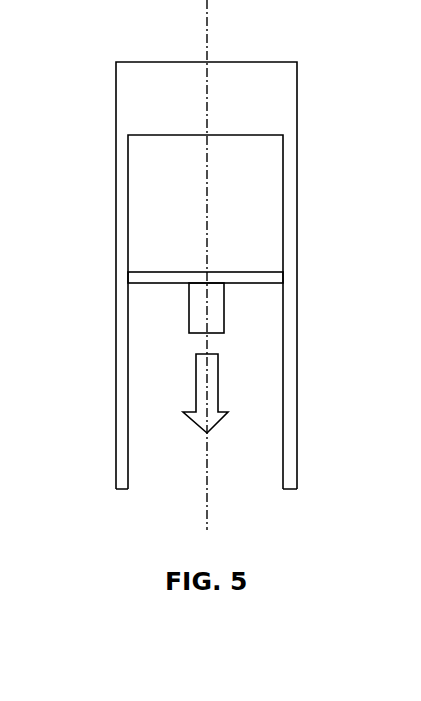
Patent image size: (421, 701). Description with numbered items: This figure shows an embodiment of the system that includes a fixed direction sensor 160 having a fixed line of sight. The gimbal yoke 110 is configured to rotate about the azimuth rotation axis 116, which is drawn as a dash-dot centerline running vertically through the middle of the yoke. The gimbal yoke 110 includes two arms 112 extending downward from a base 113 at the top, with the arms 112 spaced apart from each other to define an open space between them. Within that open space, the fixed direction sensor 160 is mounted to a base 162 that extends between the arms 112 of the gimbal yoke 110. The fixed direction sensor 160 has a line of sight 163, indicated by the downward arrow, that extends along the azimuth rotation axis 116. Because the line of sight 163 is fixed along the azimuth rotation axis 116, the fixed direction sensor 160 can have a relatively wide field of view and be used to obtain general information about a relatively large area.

The gimbal yoke 110 is at (230, 80).
The arms 112 is at (116, 348).
The base 113 is at (278, 62).
The azimuth rotation axis 116 is at (207, 30).
The fixed direction sensor 160 is at (224, 308).
The base 162 is at (262, 270).
The line of sight 163 is at (218, 387).